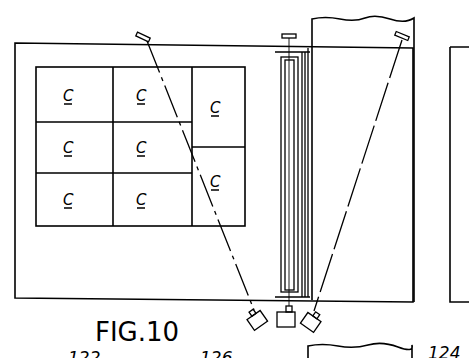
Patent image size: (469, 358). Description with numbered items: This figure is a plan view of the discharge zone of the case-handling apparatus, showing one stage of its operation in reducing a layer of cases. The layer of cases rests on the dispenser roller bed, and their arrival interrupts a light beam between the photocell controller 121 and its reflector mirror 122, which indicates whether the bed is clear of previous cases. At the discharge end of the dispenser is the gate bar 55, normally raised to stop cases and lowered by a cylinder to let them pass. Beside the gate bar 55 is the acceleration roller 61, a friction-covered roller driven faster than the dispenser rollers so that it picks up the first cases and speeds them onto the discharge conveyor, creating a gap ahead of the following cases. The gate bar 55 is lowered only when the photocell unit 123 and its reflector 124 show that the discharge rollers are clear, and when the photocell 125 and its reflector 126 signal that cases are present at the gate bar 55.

The gate bar 55 is at (306, 107).
The acceleration roller 61 is at (283, 263).
The photocell controller 121 is at (249, 310).
The reflector mirror 122 is at (140, 35).
The photocell unit 123 is at (321, 320).
The reflector 124 is at (409, 35).
The photocell 125 is at (290, 328).
The reflector 126 is at (284, 36).